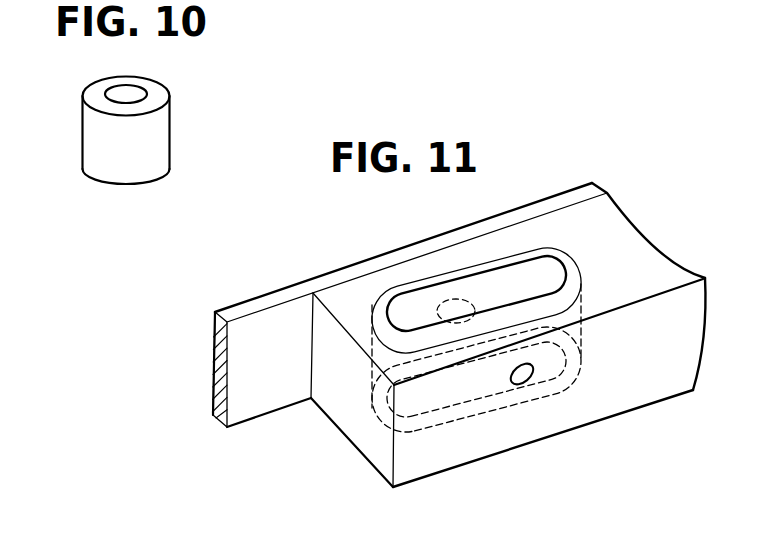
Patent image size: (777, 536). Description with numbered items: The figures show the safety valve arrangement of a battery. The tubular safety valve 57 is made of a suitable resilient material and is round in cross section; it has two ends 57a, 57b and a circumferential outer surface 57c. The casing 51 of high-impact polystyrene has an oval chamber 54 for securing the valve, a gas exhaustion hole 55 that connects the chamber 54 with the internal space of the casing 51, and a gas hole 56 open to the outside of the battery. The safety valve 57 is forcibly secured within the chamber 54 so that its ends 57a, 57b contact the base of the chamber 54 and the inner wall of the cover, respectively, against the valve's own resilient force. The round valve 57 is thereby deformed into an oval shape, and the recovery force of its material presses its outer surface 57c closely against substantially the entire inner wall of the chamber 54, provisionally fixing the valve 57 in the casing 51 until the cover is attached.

In FIG. 11, the casing 51 is at (627, 395).
In FIG. 11, the oval chamber 54 is at (512, 250).
In FIG. 11, the gas exhaustion hole 55 is at (465, 297).
In FIG. 11, the gas hole 56 is at (524, 376).
In FIG. 10, the tubular safety valve 57 is at (82, 122).
In FIG. 11, the tubular safety valve 57 is at (435, 280).
In FIG. 10, the end of safety valve 57a is at (152, 88).
In FIG. 11, the end of safety valve 57a is at (567, 261).
In FIG. 10, the end of safety valve 57b is at (148, 181).
In FIG. 10, the circumferential outer surface 57c is at (91, 155).